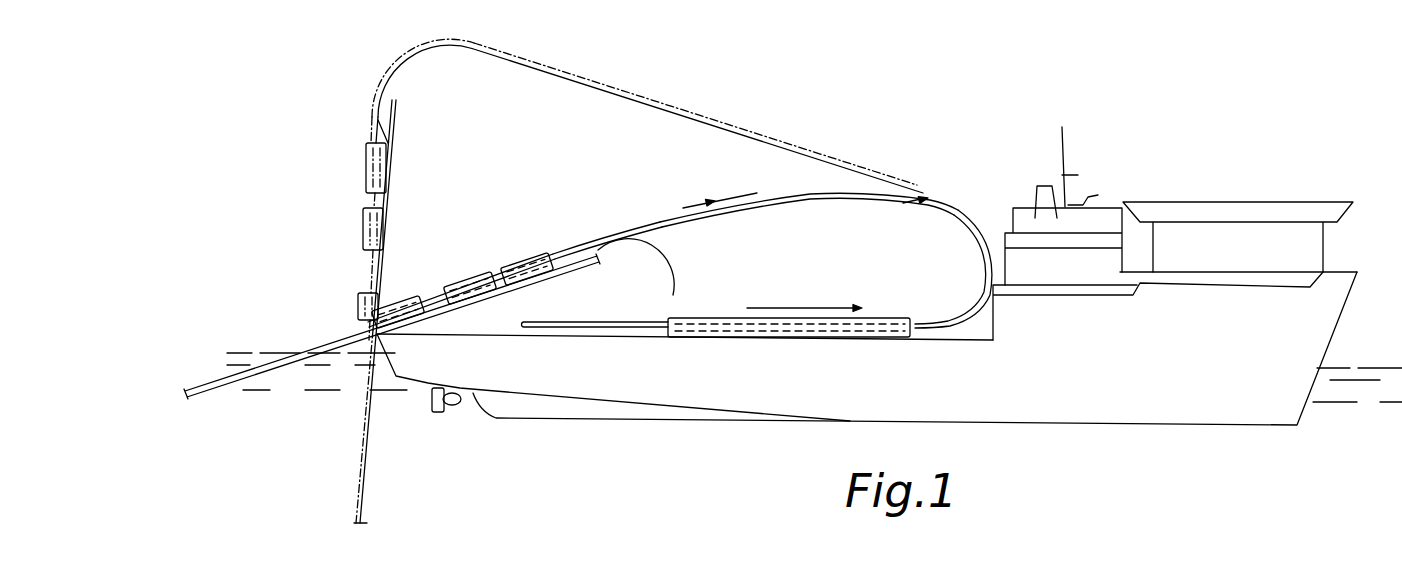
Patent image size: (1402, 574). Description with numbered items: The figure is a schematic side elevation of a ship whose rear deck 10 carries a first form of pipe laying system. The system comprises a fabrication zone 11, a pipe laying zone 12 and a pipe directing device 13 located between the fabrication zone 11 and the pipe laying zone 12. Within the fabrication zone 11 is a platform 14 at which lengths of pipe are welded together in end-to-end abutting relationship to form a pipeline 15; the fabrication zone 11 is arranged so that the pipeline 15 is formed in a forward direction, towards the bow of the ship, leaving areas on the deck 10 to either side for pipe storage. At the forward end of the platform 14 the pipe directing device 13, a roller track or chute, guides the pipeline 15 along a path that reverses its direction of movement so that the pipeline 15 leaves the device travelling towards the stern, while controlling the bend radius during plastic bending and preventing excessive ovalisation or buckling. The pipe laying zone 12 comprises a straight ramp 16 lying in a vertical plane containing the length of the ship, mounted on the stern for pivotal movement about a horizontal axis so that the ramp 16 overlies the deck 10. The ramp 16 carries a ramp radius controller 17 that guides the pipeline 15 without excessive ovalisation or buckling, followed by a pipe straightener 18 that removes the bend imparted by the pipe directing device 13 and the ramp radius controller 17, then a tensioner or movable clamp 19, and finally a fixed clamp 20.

The rear deck 10 is at (965, 342).
The fabrication zone 11 is at (910, 290).
The pipe laying zone 12 is at (555, 213).
The pipe directing device 13 is at (971, 200).
The platform 14 is at (788, 338).
The pipeline 15 is at (709, 120).
The straight ramp 16 is at (556, 271).
The ramp radius controller 17 is at (394, 70).
The pipe straightener 18 is at (366, 168).
The tensioner or movable clamp 19 is at (363, 228).
The fixed clamp 20 is at (358, 296).